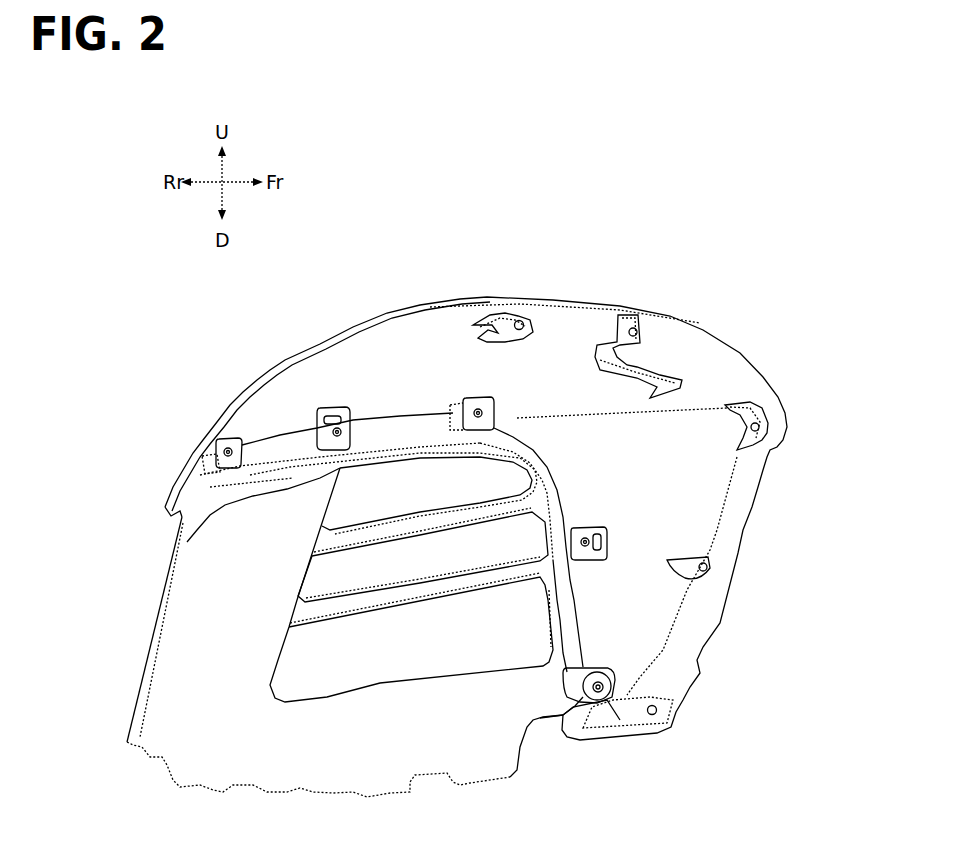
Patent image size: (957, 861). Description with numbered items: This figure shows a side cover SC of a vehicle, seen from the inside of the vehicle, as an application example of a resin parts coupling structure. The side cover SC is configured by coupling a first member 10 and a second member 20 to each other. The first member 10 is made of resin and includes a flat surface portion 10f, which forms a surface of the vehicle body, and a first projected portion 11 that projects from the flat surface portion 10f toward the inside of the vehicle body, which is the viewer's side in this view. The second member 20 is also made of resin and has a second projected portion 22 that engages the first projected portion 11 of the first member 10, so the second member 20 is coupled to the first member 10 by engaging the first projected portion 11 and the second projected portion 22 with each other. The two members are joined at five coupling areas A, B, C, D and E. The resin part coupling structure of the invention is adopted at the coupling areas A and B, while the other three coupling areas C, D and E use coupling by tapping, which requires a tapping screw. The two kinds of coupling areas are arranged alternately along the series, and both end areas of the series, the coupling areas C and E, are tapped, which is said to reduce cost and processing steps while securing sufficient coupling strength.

The side cover SC is at (737, 287).
The first member 10 is at (732, 360).
The flat surface portion 10f is at (590, 470).
The first projected portion 11 is at (314, 425).
The second member 20 is at (331, 573).
The second projected portion 22 is at (423, 536).
The coupling area A is at (609, 524).
The coupling area B is at (347, 406).
The coupling area C is at (612, 665).
The coupling area D is at (497, 406).
The coupling area E is at (244, 427).